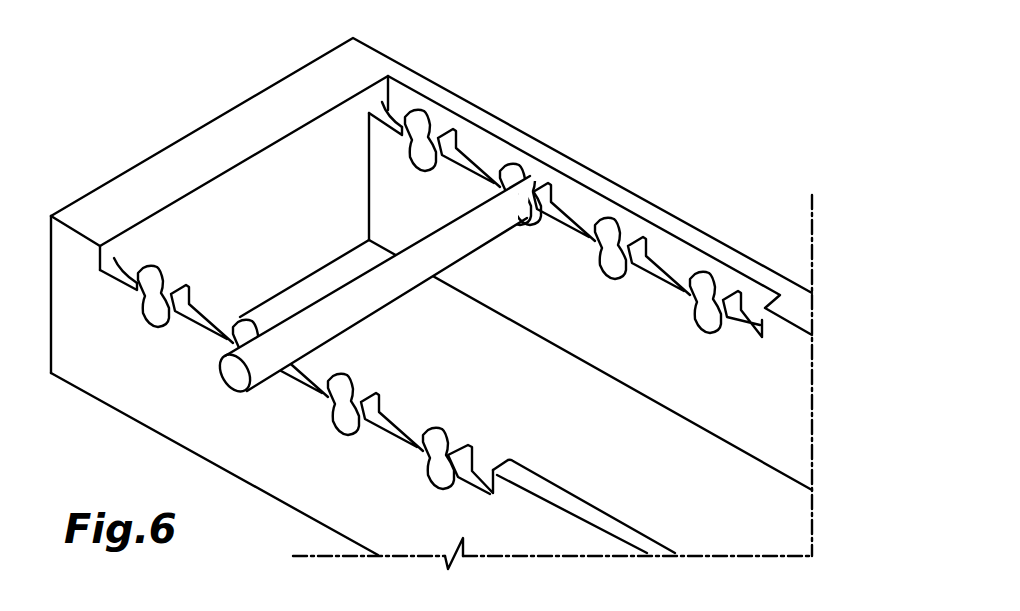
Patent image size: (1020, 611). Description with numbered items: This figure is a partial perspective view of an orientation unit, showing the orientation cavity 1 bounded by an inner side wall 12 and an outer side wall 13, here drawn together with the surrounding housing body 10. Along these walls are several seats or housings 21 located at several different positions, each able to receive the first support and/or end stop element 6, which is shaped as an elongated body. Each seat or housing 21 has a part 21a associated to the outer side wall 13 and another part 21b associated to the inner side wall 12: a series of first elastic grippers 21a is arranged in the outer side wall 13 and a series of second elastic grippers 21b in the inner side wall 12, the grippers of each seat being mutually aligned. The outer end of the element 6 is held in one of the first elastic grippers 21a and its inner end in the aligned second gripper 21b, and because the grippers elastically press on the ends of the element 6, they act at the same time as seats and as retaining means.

The orientation cavity 1 is at (480, 392).
The first support and/or end stop element 6 is at (375, 300).
The housing 10 is at (228, 197).
The inner side wall 12 is at (585, 338).
The outer side wall 13 is at (281, 480).
The seats or housings 21 is at (405, 327).
The first elastic grippers 21a is at (148, 313).
The second elastic grippers 21b is at (640, 247).